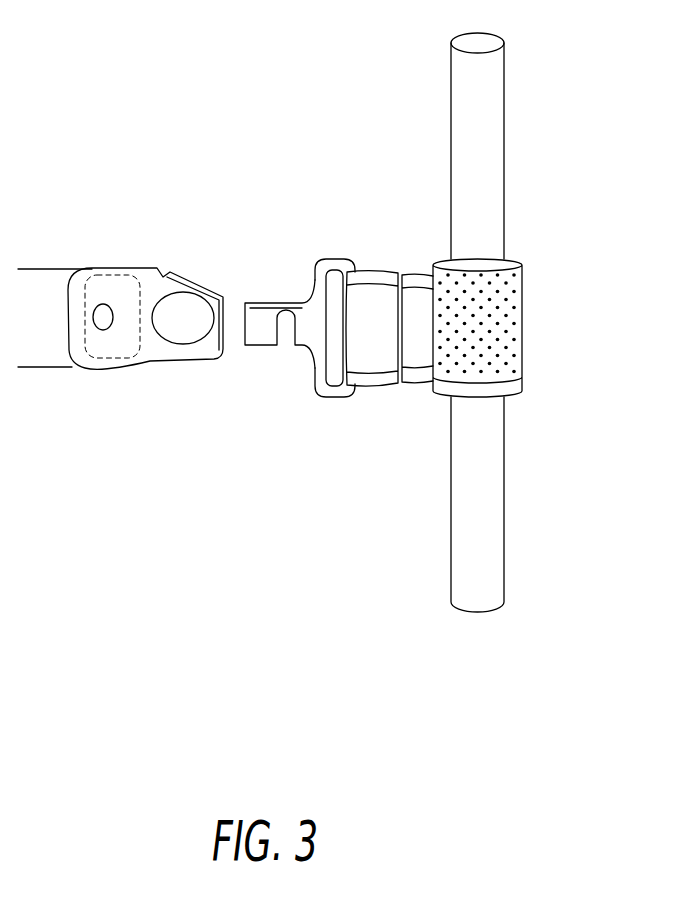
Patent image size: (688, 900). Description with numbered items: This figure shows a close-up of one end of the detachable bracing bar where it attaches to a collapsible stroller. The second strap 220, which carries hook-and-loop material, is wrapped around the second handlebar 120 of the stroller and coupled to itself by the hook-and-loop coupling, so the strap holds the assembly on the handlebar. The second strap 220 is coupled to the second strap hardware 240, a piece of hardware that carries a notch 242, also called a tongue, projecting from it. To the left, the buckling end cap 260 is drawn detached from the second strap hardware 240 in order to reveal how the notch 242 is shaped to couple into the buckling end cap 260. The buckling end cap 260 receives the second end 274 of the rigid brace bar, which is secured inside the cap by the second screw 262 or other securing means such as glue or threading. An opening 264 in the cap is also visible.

The second handlebar 120 is at (485, 135).
The second strap 220 is at (529, 297).
The second strap hardware 240 is at (335, 259).
The notch 242 is at (266, 288).
The buckling end cap 260 is at (125, 282).
The second screw 262 is at (100, 338).
The opening 264 is at (187, 325).
The second end 274 is at (140, 338).